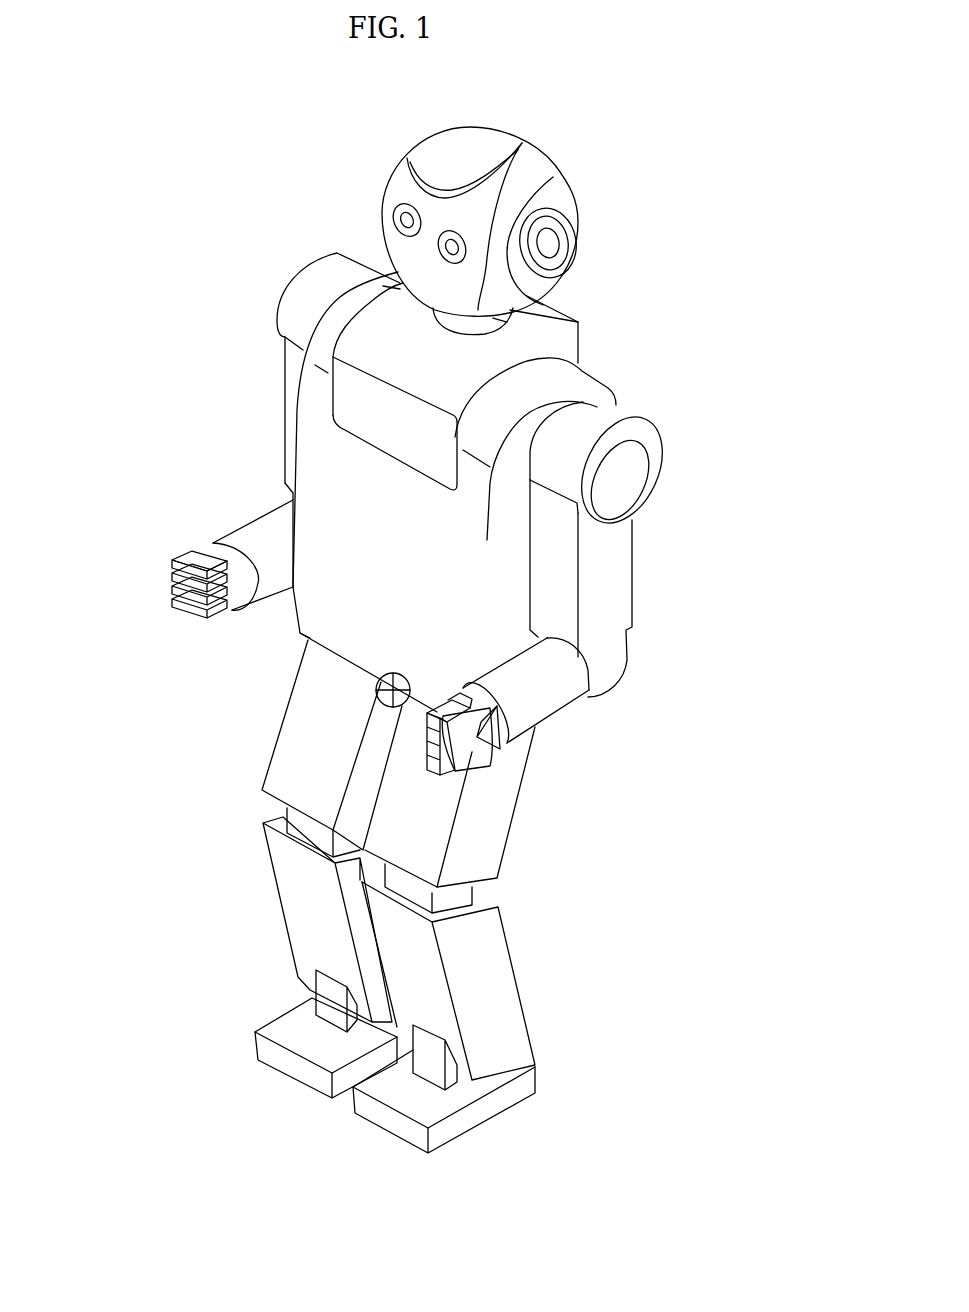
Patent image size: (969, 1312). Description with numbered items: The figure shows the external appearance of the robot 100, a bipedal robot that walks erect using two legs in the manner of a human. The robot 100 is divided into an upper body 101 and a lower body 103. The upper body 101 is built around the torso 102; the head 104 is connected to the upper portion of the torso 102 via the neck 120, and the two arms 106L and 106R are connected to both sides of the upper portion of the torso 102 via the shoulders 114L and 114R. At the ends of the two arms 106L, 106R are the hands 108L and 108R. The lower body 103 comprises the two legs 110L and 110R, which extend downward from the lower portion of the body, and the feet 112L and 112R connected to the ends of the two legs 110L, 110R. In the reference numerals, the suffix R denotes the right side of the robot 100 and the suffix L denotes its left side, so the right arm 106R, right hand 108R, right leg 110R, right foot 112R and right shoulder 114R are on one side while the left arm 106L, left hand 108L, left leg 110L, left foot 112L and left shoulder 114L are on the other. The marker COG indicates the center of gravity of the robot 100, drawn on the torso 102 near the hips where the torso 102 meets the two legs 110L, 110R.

The robot 100 is at (382, 86).
The upper body 101 is at (178, 358).
The torso 102 is at (330, 468).
The lower body 103 is at (228, 803).
The head 104 is at (387, 190).
The right arm 106R is at (240, 533).
The left arm 106L is at (620, 650).
The right hand 108R is at (168, 573).
The left hand 108L is at (473, 750).
The right leg 110R is at (290, 903).
The left leg 110L is at (503, 980).
The right foot 112R is at (263, 1047).
The left foot 112L is at (478, 1112).
The right shoulder 114R is at (303, 288).
The left shoulder 114L is at (618, 427).
The neck 120 is at (548, 297).
The center of gravity COG is at (377, 686).